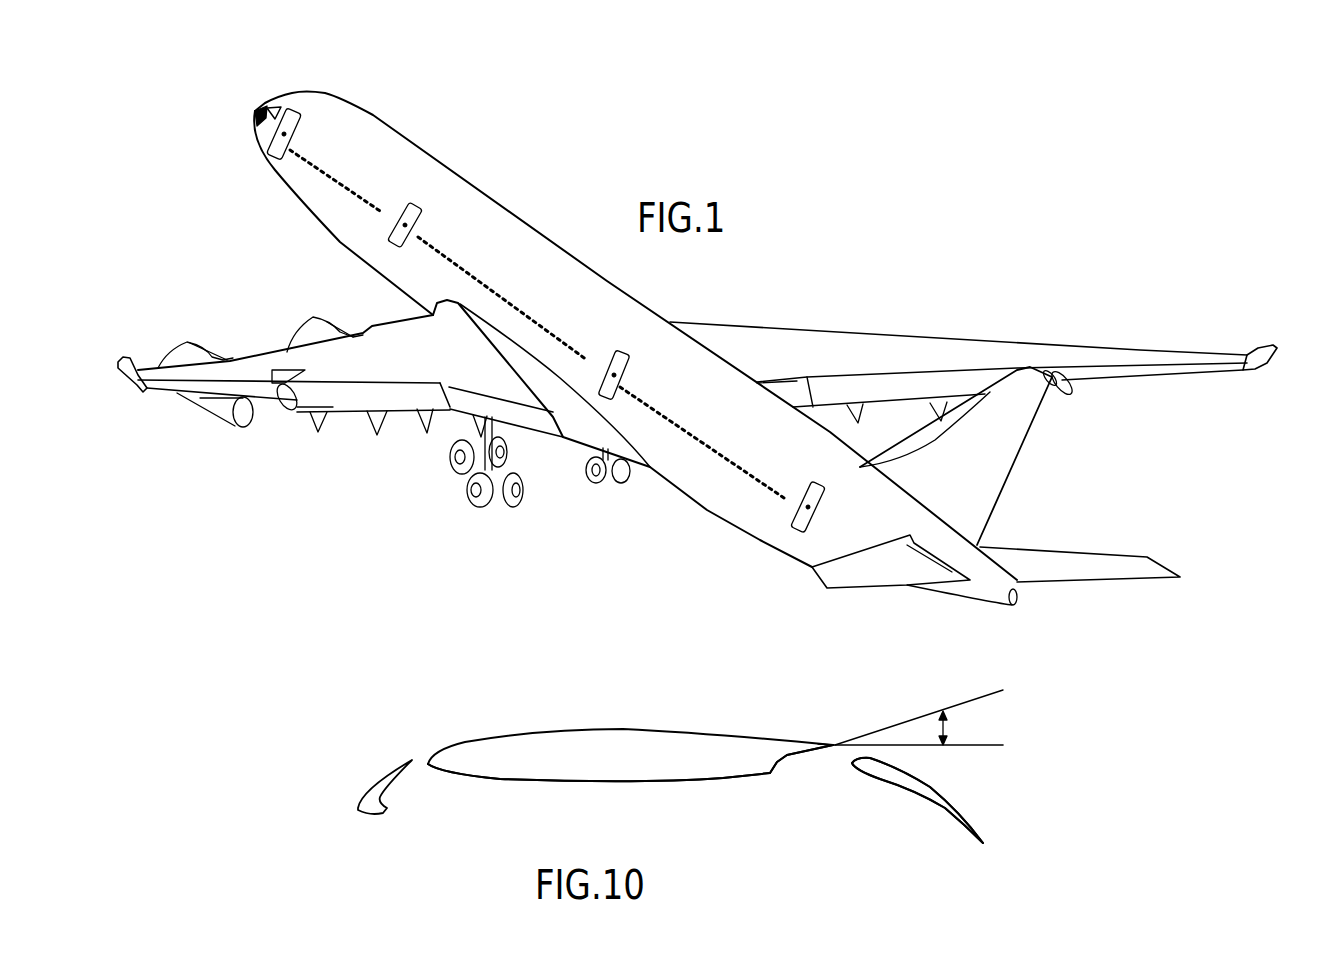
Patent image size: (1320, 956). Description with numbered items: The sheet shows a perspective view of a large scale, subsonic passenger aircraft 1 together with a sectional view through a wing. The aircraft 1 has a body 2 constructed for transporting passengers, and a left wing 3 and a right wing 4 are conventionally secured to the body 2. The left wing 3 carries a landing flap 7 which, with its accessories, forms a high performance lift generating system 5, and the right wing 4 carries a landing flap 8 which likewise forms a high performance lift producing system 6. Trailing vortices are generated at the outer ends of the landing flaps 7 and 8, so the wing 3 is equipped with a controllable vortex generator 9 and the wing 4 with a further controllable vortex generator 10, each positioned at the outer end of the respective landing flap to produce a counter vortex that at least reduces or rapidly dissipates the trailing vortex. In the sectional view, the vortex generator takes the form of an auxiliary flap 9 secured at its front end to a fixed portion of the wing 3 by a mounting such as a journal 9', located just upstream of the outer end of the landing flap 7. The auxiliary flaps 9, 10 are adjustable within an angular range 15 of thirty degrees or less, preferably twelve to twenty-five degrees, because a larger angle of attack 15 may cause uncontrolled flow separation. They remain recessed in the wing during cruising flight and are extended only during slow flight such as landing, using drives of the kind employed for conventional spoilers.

In FIG. 1, the aircraft 1 is at (473, 82).
In FIG. 1, the aircraft body 2 is at (359, 124).
In FIG. 1, the left wing 3 is at (300, 360).
In FIG. 10, the left wing 3 is at (598, 767).
In FIG. 1, the right wing 4 is at (812, 343).
In FIG. 10, the right wing 4 is at (599, 798).
In FIG. 1, the high performance lift generating system 5 is at (362, 438).
In FIG. 10, the high performance lift generating system 5 is at (839, 857).
In FIG. 1, the high performance lift producing system 6 is at (895, 427).
In FIG. 10, the high performance lift producing system 6 is at (830, 860).
In FIG. 1, the landing flap 7 is at (407, 403).
In FIG. 10, the landing flap 7 is at (915, 788).
In FIG. 1, the landing flap 8 is at (953, 380).
In FIG. 10, the landing flap 8 is at (917, 802).
In FIG. 1, the controllable vortex generator 9 is at (302, 422).
In FIG. 10, the controllable vortex generator 9 is at (883, 728).
In FIG. 10, the journal 9' is at (815, 772).
In FIG. 1, the controllable vortex generator 10 is at (1040, 357).
In FIG. 10, the controllable vortex generator 10 is at (807, 728).
In FIG. 10, the angular range 15 is at (957, 722).